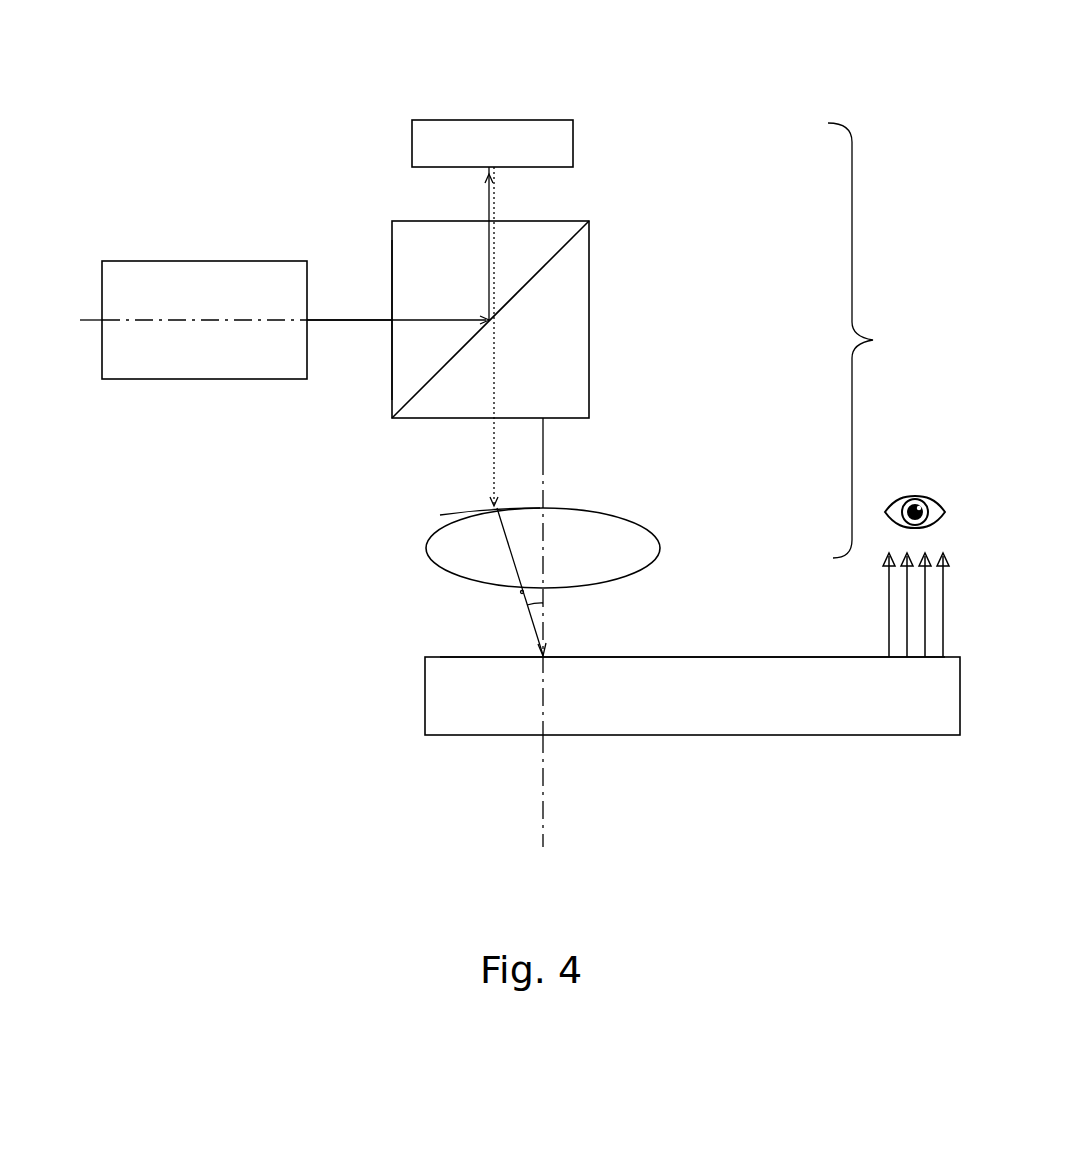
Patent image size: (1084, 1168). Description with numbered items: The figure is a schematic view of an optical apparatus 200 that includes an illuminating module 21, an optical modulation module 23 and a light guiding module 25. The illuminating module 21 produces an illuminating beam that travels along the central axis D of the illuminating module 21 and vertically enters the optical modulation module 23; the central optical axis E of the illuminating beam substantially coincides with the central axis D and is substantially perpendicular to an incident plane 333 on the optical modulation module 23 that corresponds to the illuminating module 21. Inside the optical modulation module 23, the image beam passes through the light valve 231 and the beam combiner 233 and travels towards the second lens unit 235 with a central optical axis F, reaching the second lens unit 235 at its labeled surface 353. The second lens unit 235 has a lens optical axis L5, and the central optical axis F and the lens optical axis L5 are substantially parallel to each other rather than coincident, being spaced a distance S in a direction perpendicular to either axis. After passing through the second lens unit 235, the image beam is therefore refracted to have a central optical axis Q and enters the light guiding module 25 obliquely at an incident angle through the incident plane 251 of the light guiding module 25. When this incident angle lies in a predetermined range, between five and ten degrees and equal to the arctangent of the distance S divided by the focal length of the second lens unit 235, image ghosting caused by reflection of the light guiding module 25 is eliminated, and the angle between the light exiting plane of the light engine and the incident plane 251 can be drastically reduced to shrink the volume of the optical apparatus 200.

The optical apparatus 200 is at (202, 44).
The illuminating module 21 is at (200, 308).
The optical modulation module 23 is at (661, 354).
The light valve 231 is at (557, 138).
The beam combiner 233 is at (557, 288).
The second lens unit 235 is at (567, 527).
The incident plane 333 is at (392, 373).
The incident surface of lens 353 is at (458, 518).
The light guiding module 25 is at (473, 713).
The incident plane 251 is at (695, 657).
The central axis D is at (264, 319).
The central optical axis E is at (341, 318).
The central optical axis F is at (497, 383).
The distance S is at (518, 507).
The central optical axis Q is at (522, 595).
The lens optical axis L5 is at (545, 776).